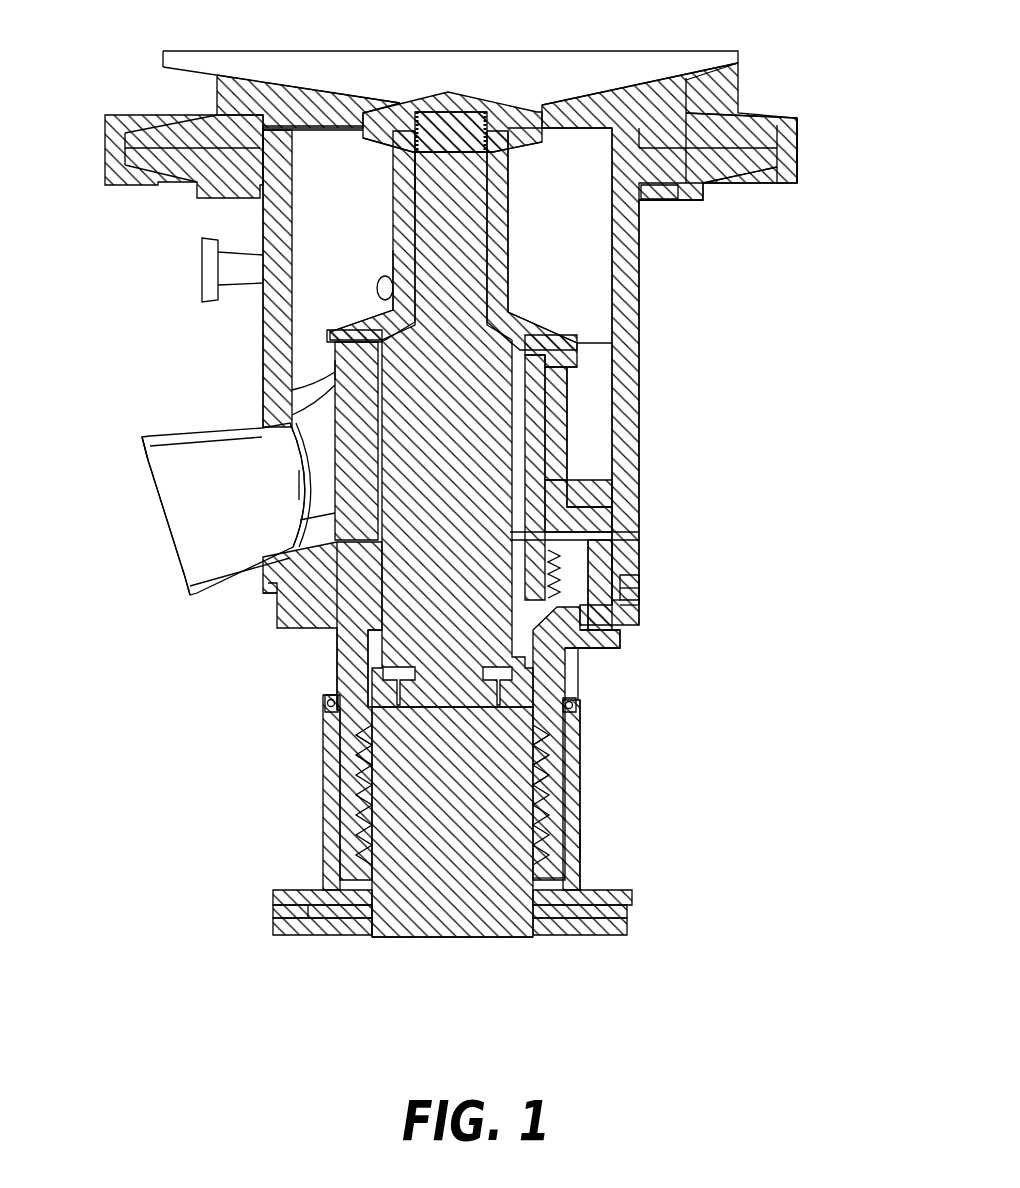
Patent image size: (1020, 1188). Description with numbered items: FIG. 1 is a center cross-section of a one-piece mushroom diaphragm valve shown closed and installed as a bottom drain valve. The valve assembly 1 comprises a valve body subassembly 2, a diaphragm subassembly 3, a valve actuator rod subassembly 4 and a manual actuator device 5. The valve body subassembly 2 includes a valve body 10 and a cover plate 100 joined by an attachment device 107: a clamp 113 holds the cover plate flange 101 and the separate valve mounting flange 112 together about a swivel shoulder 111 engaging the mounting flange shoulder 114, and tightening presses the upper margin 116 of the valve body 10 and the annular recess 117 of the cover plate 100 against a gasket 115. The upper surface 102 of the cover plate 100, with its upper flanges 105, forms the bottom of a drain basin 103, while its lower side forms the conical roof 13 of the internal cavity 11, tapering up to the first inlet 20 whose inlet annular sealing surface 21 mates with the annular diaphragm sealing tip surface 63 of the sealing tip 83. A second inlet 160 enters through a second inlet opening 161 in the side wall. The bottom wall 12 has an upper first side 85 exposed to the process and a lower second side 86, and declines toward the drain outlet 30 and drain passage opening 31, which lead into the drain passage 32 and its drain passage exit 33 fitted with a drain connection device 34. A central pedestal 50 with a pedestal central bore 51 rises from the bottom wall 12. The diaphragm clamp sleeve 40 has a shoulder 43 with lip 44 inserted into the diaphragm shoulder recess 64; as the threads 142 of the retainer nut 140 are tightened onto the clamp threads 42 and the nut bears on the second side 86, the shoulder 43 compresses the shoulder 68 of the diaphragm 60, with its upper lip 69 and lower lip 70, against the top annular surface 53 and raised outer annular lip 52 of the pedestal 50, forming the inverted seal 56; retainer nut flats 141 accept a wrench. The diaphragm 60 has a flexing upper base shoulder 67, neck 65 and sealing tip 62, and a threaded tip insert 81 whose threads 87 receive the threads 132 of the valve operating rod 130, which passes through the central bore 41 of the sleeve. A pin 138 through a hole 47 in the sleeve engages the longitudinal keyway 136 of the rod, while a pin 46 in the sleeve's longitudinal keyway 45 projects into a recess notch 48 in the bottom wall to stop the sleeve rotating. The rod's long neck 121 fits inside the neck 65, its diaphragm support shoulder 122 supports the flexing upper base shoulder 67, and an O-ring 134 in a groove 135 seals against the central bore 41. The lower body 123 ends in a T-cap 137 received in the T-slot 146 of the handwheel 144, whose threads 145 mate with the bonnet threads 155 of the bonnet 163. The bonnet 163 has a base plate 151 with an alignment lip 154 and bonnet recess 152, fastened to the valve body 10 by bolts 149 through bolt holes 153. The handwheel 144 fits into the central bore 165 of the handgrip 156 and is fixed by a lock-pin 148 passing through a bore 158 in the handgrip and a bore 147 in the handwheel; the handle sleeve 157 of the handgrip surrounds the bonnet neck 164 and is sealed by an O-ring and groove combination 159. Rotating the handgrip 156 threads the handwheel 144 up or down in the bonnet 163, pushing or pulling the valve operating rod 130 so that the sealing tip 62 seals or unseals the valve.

The valve assembly 1 is at (140, 418).
The valve body subassembly 2 is at (745, 245).
The diaphragm subassembly 3 is at (368, 205).
The valve actuator rod subassembly 4 is at (548, 303).
The actuator device 5 is at (140, 662).
The valve body 10 is at (632, 278).
The internal cavity 11 is at (581, 250).
The bottom wall 12 is at (615, 515).
The roof 13 is at (575, 123).
The first inlet 20 is at (500, 110).
The inlet annular sealing surface 21 is at (372, 140).
The drain outlet 30 is at (318, 493).
The drain passage opening 31 is at (300, 460).
The drain passage 32 is at (223, 509).
The drain passage exit 33 is at (165, 520).
The drain connection device 34 is at (150, 450).
The diaphragm clamp sleeve 40 is at (358, 412).
The central bore 41 is at (327, 513).
The clamp threads 42 is at (315, 708).
The shoulder 43 is at (355, 328).
The lip 44 is at (332, 368).
The longitudinal keyway 45 is at (560, 650).
The pin 46 is at (632, 592).
The hole 47 is at (612, 560).
The recess notch 48 is at (627, 578).
The pedestal 50 is at (562, 435).
The pedestal central bore 51 is at (588, 483).
The raised outer annular lip 52 is at (292, 390).
The top annular surface 53 is at (292, 415).
The inverted seal 56 is at (567, 403).
The diaphragm 60 is at (493, 268).
The sealing tip 62 is at (513, 110).
The annular diaphragm sealing tip surface 63 is at (370, 112).
The diaphragm shoulder recess 64 is at (330, 336).
The neck 65 is at (495, 233).
The flexing upper base shoulder 67 is at (610, 320).
The shoulder 68 is at (577, 367).
The upper lip 69 is at (580, 348).
The lower lip 70 is at (567, 390).
The threaded tip insert 81 is at (417, 110).
The sealing tip 83 is at (517, 107).
The upper first side 85 is at (622, 512).
The lower second side 86 is at (283, 600).
The threads 87 is at (412, 160).
The cover plate 100 is at (700, 92).
The cover plate flange 101 is at (748, 118).
The upper surface 102 is at (655, 65).
The drain basin 103 is at (640, 76).
The upper flanges 105 is at (178, 65).
The attachment device 107 is at (810, 152).
The swivel shoulder 111 is at (665, 200).
The valve mounting flange 112 is at (740, 170).
The clamp 113 is at (800, 142).
The mounting flange shoulder 114 is at (660, 200).
The gasket 115 is at (300, 118).
The upper margin 116 is at (263, 127).
The annular recess 117 is at (283, 126).
The long neck 121 is at (437, 210).
The diaphragm support shoulder 122 is at (357, 323).
The lower body 123 is at (578, 662).
The valve operating rod 130 is at (452, 429).
The threads 132 is at (398, 152).
The O-ring 134 is at (520, 335).
The groove 135 is at (303, 478).
The longitudinal keyway 136 is at (600, 532).
The T-cap 137 is at (582, 750).
The pin 138 is at (612, 548).
The retainer nut 140 is at (338, 625).
The retainer nut flats 141 is at (340, 655).
The threads 142 is at (332, 612).
The handwheel 144 is at (452, 822).
The threads 145 is at (555, 792).
The T-slot 146 is at (574, 762).
The bore 147 is at (420, 935).
The lock-pin 148 is at (627, 930).
The bolts 149 is at (630, 650).
The base plate 151 is at (622, 640).
The bonnet recess 152 is at (614, 600).
The bolt holes 153 is at (628, 617).
The alignment lip 154 is at (645, 600).
The bonnet threads 155 is at (560, 862).
The handgrip 156 is at (642, 893).
The handle sleeve 157 is at (577, 845).
The bore 158 is at (640, 912).
The O-ring and groove combination 159 is at (578, 708).
The second inlet 160 is at (202, 262).
The second inlet opening 161 is at (390, 290).
The bonnet 163 is at (283, 608).
The bonnet neck 164 is at (555, 822).
The central bore 165 is at (492, 938).